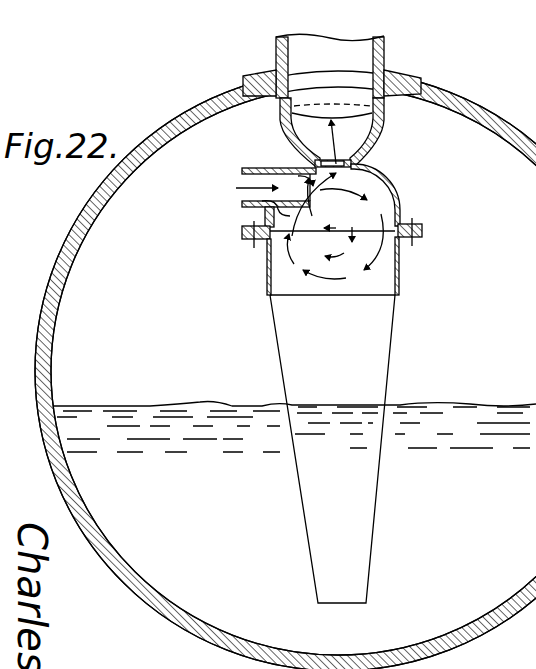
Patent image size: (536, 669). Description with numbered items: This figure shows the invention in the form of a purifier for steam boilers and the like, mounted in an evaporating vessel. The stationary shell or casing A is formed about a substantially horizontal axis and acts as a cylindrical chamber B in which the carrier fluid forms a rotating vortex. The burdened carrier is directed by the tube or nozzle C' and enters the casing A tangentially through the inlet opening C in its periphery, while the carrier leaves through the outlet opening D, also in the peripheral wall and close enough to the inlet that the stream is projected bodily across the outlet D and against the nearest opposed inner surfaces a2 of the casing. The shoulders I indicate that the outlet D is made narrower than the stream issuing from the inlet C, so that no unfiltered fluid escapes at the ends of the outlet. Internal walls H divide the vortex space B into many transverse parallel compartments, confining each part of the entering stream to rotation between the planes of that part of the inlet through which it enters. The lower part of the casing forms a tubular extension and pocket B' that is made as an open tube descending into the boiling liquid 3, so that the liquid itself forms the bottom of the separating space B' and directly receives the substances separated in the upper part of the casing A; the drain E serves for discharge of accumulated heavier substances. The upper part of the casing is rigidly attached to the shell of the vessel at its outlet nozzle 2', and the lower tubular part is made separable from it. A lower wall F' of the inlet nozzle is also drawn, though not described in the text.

The outlet nozzle 2' is at (332, 100).
The outlet opening D is at (344, 158).
The shoulders I is at (355, 168).
The inner surfaces of the casing a2 is at (396, 187).
The shell or casing A is at (402, 207).
The internal walls H is at (336, 204).
The chamber or vortex space B is at (332, 252).
The inlet opening C is at (276, 167).
The tube or nozzle C' is at (262, 173).
The pipe lower wall F' is at (257, 209).
The pocket or separating space B' is at (332, 449).
The drain or opening E is at (364, 404).
The boiling liquid 3 is at (293, 429).